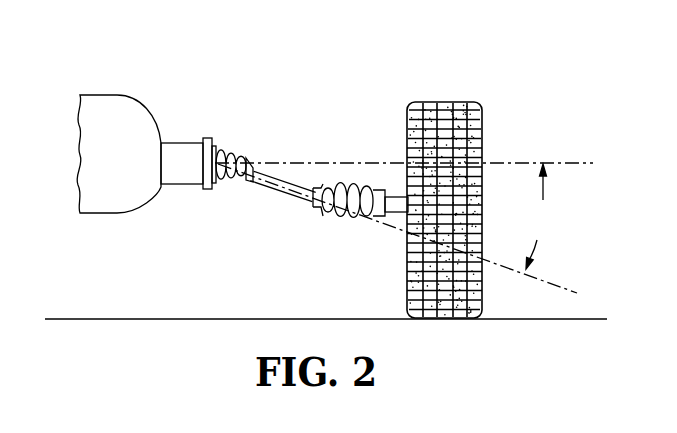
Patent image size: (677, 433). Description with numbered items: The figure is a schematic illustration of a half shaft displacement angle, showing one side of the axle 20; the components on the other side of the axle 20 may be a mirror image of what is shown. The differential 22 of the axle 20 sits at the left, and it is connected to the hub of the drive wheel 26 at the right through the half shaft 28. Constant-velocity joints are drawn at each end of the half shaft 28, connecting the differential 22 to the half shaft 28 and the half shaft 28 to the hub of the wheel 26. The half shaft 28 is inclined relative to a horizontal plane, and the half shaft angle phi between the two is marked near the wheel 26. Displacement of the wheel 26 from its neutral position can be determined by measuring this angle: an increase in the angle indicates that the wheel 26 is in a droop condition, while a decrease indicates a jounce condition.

The axle 20 is at (521, 85).
The differential 22 is at (112, 95).
The drive wheel 26 is at (445, 102).
The half shaft 28 is at (280, 189).